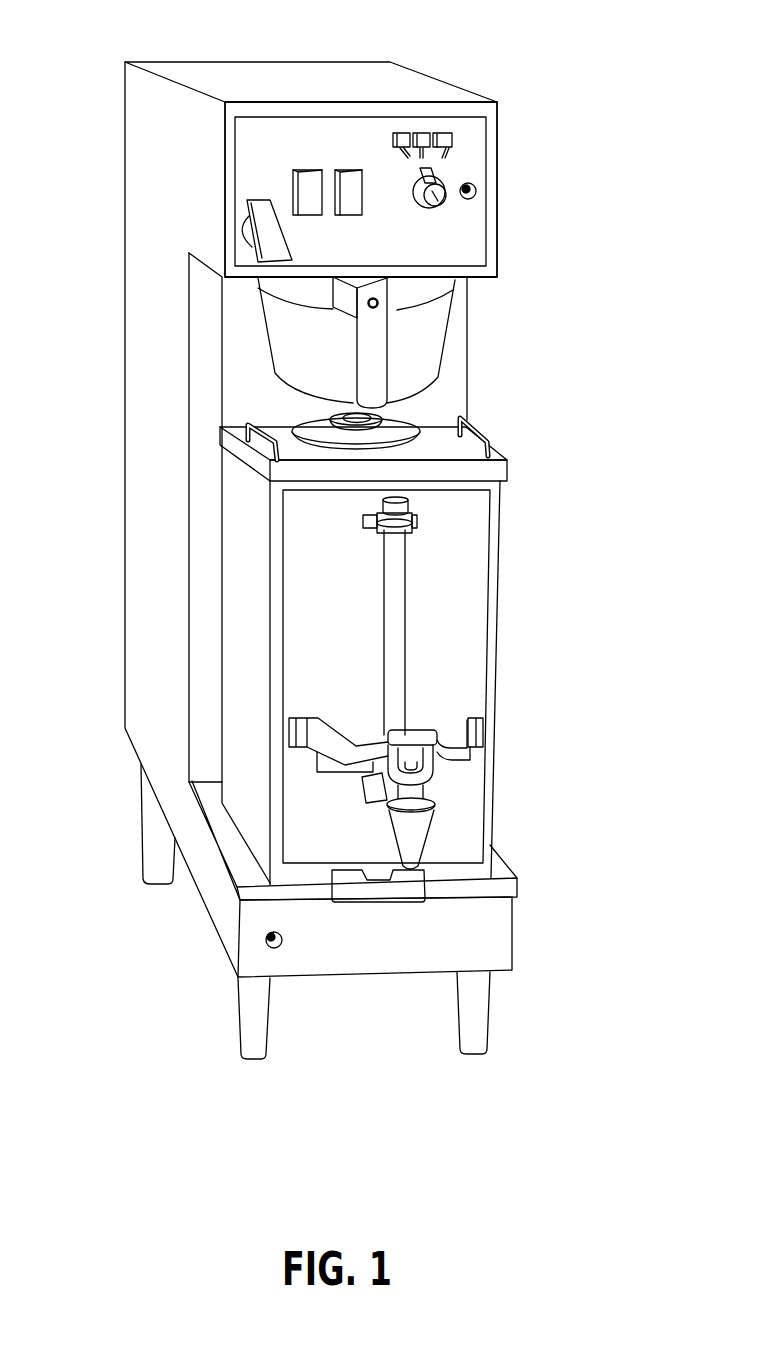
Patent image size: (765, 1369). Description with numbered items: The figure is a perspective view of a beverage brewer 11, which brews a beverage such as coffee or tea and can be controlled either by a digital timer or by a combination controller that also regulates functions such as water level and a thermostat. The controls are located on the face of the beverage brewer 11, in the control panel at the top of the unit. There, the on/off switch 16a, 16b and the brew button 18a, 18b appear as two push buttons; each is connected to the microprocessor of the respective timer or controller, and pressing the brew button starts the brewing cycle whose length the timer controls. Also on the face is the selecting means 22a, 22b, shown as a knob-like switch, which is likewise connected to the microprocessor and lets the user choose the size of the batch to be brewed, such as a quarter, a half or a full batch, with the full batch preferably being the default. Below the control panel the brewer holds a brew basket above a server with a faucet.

The beverage brewer 11 is at (361, 531).
The on/off switch 16a is at (410, 123).
The on/off switch 16b is at (353, 168).
The brew button 18a is at (372, 109).
The brew button 18b is at (305, 168).
The selecting means 22a is at (500, 193).
The selecting means 22b is at (438, 199).